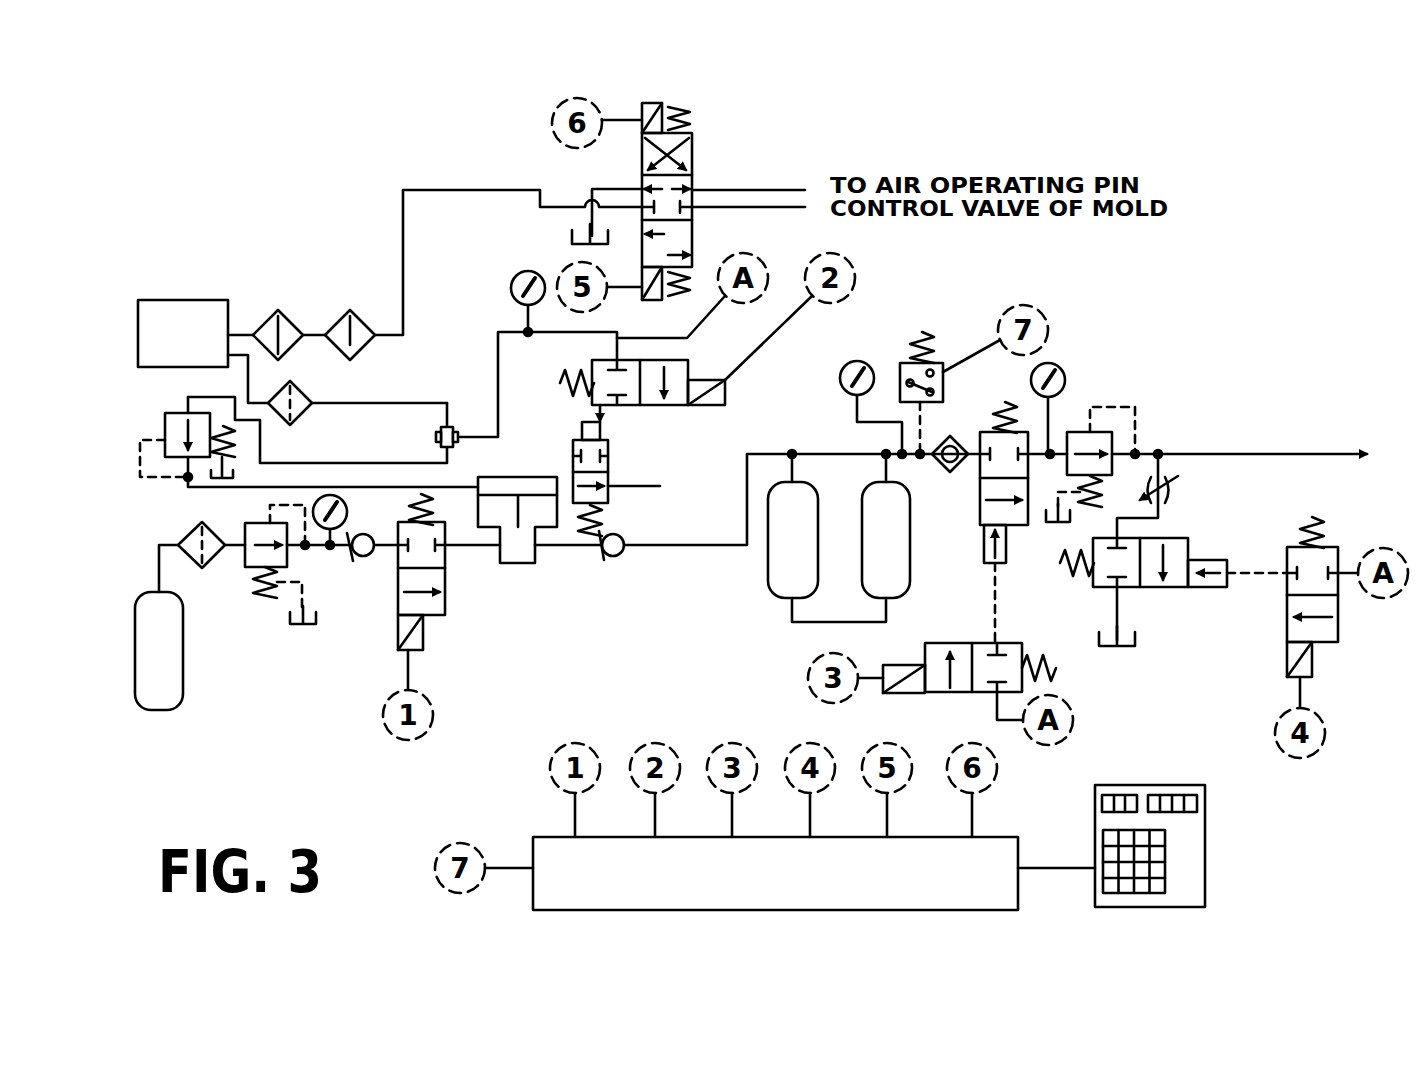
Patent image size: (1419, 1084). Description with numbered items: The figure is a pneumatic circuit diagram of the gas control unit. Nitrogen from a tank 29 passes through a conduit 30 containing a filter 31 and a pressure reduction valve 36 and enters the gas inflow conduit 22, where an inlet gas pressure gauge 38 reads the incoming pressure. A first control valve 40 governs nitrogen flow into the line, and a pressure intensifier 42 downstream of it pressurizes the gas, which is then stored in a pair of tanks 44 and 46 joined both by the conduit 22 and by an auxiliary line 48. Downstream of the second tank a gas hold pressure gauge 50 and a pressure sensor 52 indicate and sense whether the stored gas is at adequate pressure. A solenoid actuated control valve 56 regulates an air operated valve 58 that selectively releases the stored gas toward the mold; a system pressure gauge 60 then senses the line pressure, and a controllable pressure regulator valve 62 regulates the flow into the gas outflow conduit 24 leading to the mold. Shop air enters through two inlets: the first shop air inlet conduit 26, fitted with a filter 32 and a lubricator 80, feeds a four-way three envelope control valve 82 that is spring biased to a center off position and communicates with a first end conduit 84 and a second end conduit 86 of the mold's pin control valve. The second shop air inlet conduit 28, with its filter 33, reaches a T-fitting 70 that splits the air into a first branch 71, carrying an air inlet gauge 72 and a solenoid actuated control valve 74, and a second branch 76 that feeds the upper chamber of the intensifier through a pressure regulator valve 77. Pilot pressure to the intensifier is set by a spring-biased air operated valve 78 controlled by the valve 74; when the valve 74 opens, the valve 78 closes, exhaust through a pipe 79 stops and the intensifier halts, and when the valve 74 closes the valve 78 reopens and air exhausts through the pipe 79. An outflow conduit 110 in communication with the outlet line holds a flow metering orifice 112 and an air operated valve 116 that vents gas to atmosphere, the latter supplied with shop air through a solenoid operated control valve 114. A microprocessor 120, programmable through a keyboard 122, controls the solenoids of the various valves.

The gas inflow conduit 22 is at (666, 548).
The gas outflow conduit 24 is at (1280, 456).
The first shop air inlet conduit 26 is at (238, 334).
The second shop air inlet conduit 28 is at (252, 380).
The tank 29 is at (162, 650).
The conduit 30 is at (178, 540).
The filter 31 is at (208, 540).
The filter 32 is at (285, 328).
The filter 33 is at (302, 395).
The pressure reduction valve 36 is at (257, 555).
The inlet gas pressure gauge 38 is at (347, 512).
The first control valve 40 is at (452, 618).
The pressure intensifier 42 is at (518, 566).
The tank 44 is at (778, 576).
The tank 46 is at (888, 553).
The auxiliary line 48 is at (800, 623).
The gas hold pressure gauge 50 is at (840, 372).
The pressure sensor 52 is at (938, 360).
The solenoid actuated control valve 56 is at (940, 640).
The air operated valve 58 is at (977, 470).
The system pressure gauge 60 is at (1058, 368).
The controllable pressure regulator valve 62 is at (1078, 437).
The T-fitting 70 is at (438, 437).
The first branch 71 is at (497, 380).
The air inlet gauge 72 is at (513, 278).
The control valve 74 is at (660, 410).
The second branch 76 is at (350, 463).
The pressure regulator valve 77 is at (172, 415).
The valve 78 is at (570, 470).
The pipe 79 is at (638, 486).
The lubricator 80 is at (363, 325).
The four-way three envelope control valve 82 is at (700, 146).
The first end conduit 84 is at (712, 190).
The second end conduit 86 is at (715, 207).
The outflow conduit 110 is at (1164, 467).
The flow metering orifice 112 is at (1172, 497).
The solenoid operated control valve 114 is at (1338, 650).
The air operated valve 116 is at (1158, 594).
The microprocessor 120 is at (557, 848).
The keyboard 122 is at (1185, 845).